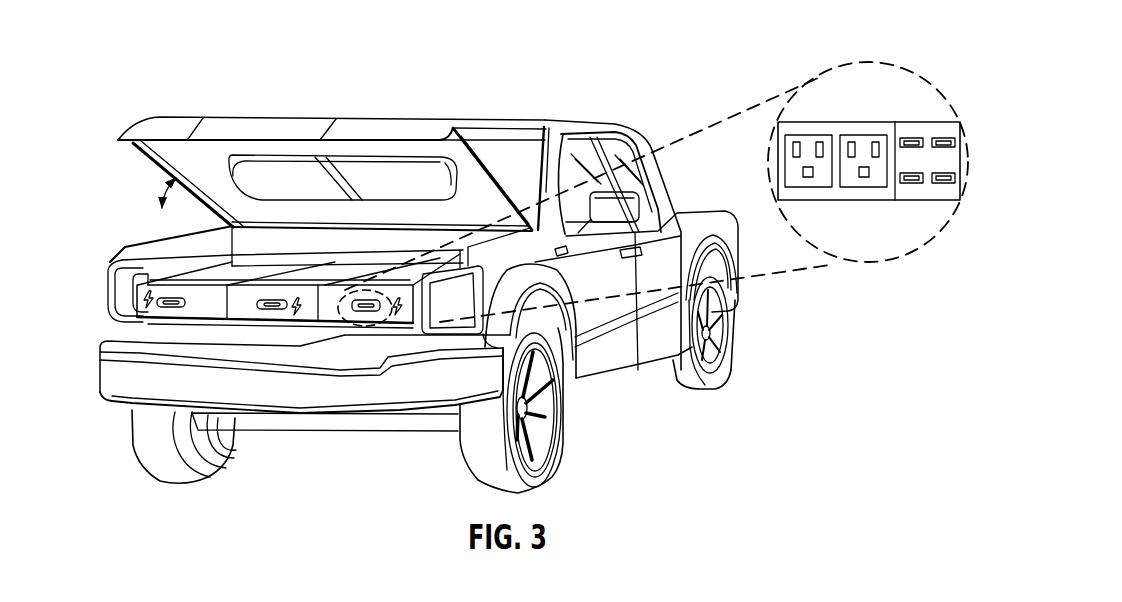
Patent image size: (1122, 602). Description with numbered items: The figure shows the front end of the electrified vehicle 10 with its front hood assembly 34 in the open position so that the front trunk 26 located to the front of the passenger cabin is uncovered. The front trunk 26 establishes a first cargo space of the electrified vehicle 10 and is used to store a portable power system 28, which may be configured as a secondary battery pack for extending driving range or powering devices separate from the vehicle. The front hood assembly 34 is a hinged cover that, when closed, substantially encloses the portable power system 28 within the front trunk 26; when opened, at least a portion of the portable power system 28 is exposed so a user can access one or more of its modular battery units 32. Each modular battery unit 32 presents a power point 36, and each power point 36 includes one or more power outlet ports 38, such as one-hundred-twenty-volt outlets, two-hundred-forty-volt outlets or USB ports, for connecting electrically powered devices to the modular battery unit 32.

The electrified vehicle 10 is at (640, 92).
The front trunk 26 is at (229, 256).
The portable power system 28 is at (338, 260).
The modular battery unit 32 is at (145, 300).
The front hood assembly 34 is at (478, 141).
The power point 36 is at (164, 303).
The power outlet port 38 is at (810, 135).